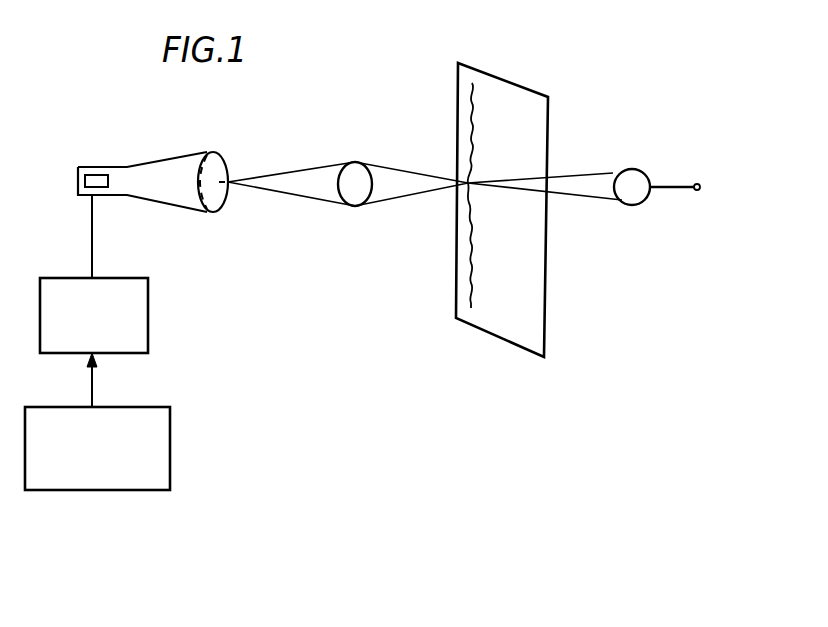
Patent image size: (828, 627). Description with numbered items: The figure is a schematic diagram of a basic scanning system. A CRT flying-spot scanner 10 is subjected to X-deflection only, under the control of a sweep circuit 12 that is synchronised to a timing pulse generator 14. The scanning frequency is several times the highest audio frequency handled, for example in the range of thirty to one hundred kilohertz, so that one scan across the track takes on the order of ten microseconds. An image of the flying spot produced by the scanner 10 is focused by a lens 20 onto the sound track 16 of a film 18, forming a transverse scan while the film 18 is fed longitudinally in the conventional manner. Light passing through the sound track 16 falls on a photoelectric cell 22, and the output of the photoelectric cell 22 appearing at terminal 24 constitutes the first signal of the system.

The CRT flying-spot scanner 10 is at (173, 159).
The sweep circuit 12 is at (148, 303).
The timing pulse generator 14 is at (170, 441).
The sound track 16 is at (468, 249).
The film 18 is at (532, 127).
The lens 20 is at (355, 162).
The photoelectric cell 22 is at (630, 205).
The terminal 24 is at (698, 183).